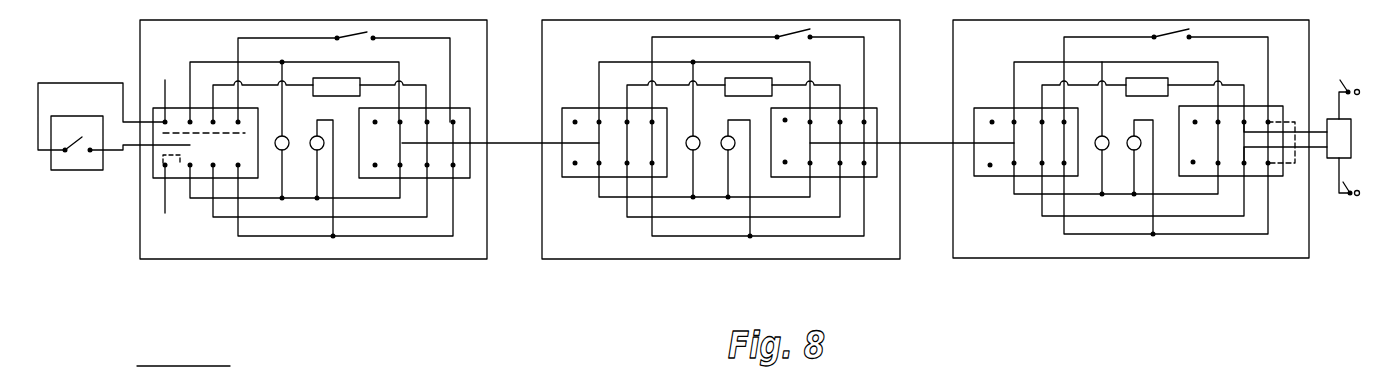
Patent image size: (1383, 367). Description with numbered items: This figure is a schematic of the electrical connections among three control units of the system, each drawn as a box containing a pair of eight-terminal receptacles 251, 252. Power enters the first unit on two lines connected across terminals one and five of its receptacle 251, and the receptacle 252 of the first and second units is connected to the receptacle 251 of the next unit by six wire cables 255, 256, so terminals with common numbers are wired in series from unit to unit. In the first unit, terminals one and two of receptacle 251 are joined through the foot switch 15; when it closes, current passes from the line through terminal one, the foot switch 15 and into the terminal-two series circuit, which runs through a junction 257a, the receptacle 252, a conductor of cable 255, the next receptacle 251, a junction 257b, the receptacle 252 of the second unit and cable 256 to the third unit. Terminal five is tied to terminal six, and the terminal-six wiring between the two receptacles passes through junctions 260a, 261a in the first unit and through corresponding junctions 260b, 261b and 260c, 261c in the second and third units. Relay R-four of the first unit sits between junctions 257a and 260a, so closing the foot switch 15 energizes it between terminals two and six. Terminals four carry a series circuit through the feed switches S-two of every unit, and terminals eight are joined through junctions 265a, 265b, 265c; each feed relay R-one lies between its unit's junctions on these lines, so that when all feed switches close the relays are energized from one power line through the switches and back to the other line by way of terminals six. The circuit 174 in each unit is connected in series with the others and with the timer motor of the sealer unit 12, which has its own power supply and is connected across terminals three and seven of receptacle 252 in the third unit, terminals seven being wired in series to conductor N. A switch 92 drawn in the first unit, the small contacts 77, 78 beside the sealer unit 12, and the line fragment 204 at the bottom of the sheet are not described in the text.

The foot switch 15 is at (66, 126).
The receptacle 251 is at (181, 178).
The receptacle 252 is at (458, 108).
The junction 257a is at (282, 62).
The junction 257b is at (693, 62).
The switch 92 is at (353, 40).
The circuit 174 is at (740, 87).
The junction 260a is at (280, 200).
The junction 261a is at (317, 200).
The junction 265a is at (333, 236).
The conductor 260b is at (693, 200).
The junction 261b is at (728, 200).
The junction 265b is at (750, 236).
The conductor 260c is at (1098, 198).
The junction 261c is at (1134, 198).
The junction 265c is at (1153, 234).
The six wire cable 255 is at (505, 142).
The six wire cable 256 is at (928, 142).
The limit switch 77 is at (1346, 90).
The limit switch 78 is at (1349, 195).
The sealer unit 12 is at (1350, 158).
The line fragment 204 is at (230, 365).